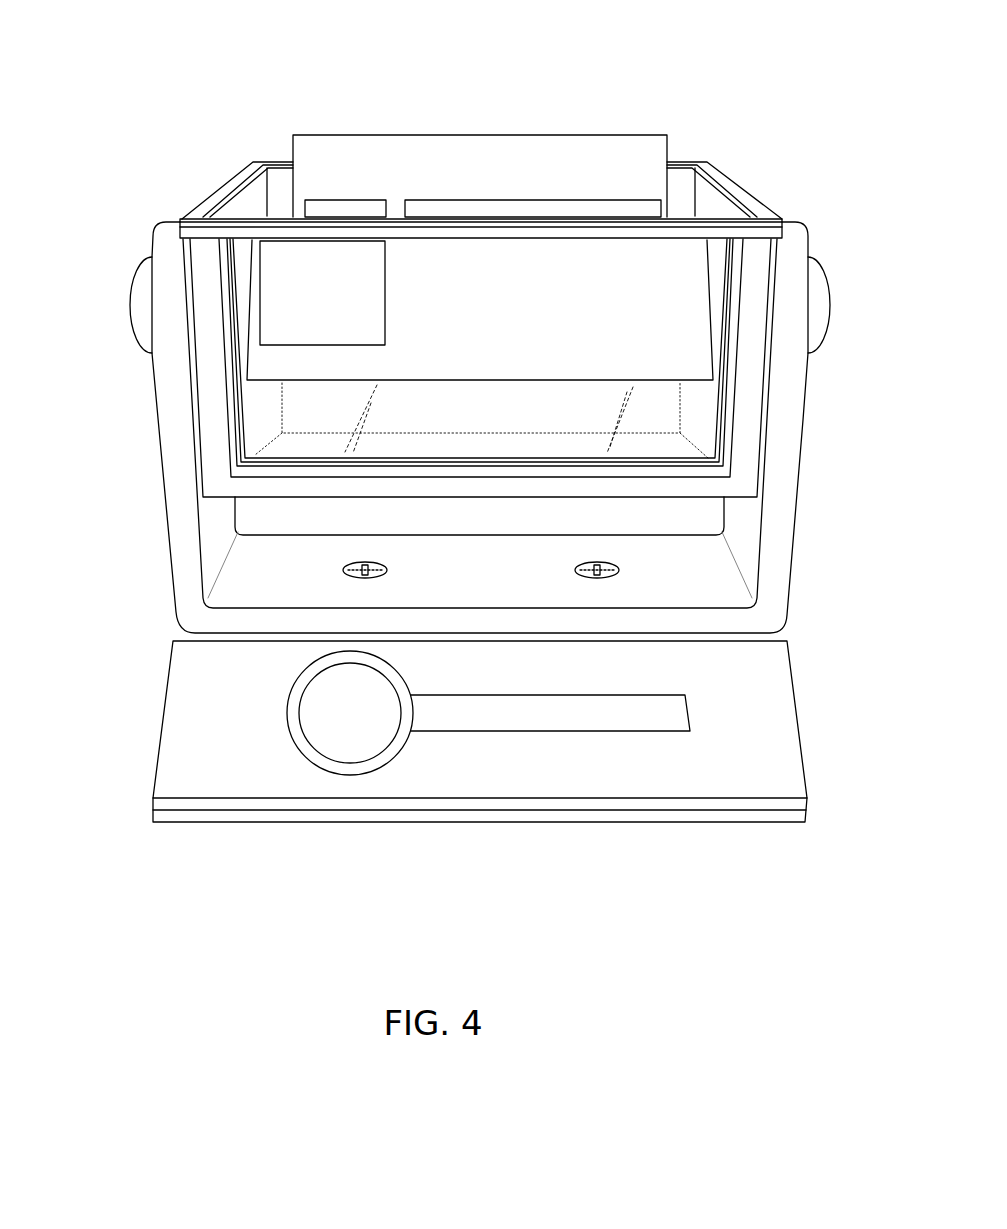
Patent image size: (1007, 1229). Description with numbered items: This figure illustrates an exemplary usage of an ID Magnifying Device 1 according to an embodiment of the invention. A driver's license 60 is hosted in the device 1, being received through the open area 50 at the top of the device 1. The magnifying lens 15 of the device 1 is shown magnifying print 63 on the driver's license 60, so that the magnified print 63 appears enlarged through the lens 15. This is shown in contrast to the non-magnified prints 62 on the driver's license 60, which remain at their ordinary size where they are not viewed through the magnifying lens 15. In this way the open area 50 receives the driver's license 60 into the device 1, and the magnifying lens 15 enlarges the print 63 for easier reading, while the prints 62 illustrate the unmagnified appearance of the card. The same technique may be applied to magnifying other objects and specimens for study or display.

The ID Magnifying Device 1 is at (256, 92).
The magnifying lens 15 is at (693, 430).
The open area 50 is at (712, 200).
The driver's license 60 is at (548, 135).
The non-magnified prints 62 is at (280, 200).
The magnified print 63 is at (253, 290).